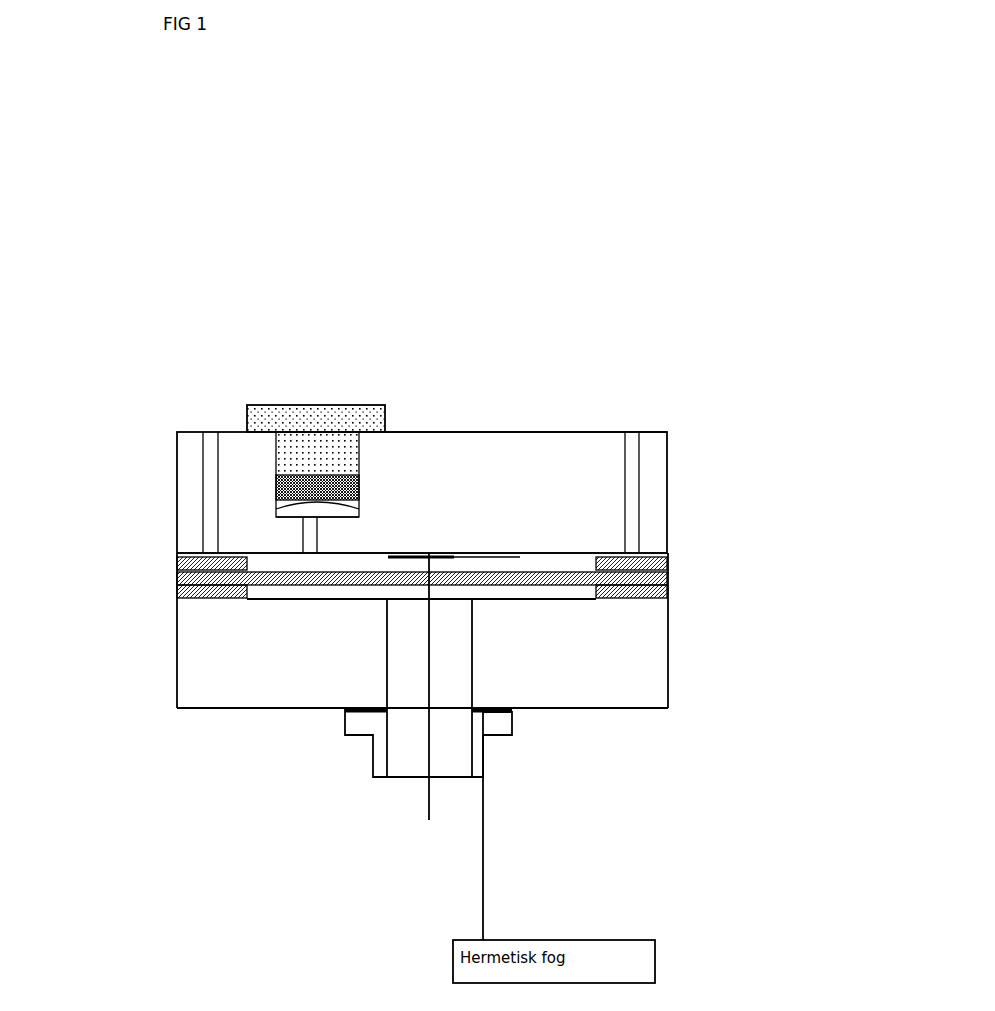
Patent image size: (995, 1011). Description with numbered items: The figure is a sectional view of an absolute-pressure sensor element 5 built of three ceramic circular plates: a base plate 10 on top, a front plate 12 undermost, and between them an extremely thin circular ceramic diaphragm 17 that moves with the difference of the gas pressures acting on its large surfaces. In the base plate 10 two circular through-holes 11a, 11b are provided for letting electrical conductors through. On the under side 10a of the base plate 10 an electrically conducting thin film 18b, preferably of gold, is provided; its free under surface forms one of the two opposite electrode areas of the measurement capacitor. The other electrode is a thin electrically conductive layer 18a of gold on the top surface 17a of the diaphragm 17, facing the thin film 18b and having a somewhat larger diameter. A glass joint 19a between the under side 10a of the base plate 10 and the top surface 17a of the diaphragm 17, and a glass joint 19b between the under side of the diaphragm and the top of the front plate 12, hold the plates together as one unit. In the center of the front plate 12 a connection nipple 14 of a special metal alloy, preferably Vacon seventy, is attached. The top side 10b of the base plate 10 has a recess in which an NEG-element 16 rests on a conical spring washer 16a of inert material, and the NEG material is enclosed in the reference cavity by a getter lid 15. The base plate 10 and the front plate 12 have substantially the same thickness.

The sensor element 5 is at (625, 328).
The base plate 10 is at (457, 458).
The under side of the base plate 10a is at (278, 553).
The top side of the base plate 10b is at (468, 407).
The circular through-hole 11a is at (640, 487).
The circular through-hole 11b is at (205, 460).
The front plate 12 is at (540, 667).
The connection nipple 14 is at (493, 737).
The getter lid 15 is at (317, 430).
The NEG-element 16 is at (323, 478).
The conical spring washer 16a is at (343, 473).
The diaphragm 17 is at (185, 582).
The top surface of the diaphragm 17a is at (512, 567).
The thin electrically conductive layer 18a is at (377, 577).
The thin film 18b is at (422, 705).
The glass joint 19a is at (192, 563).
The glass joint 19b is at (105, 812).